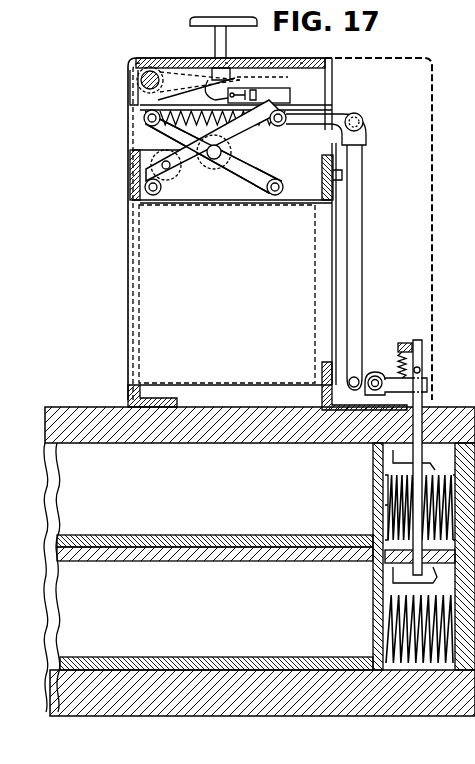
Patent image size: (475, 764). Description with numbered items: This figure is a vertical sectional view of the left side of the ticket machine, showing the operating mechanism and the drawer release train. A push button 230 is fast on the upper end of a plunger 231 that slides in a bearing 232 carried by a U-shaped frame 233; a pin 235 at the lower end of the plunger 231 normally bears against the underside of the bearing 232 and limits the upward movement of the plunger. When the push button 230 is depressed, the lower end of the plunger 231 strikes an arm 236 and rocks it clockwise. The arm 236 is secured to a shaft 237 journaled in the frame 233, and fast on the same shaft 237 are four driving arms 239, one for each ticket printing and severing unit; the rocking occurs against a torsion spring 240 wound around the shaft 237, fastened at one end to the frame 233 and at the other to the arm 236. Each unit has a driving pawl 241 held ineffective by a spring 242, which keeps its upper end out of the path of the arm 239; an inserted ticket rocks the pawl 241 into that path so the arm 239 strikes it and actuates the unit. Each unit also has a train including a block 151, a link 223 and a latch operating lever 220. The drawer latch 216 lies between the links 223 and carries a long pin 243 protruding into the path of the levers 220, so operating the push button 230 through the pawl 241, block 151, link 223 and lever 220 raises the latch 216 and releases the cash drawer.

The push button 230 is at (200, 19).
The plunger 231 is at (225, 58).
The bearing 232 is at (288, 49).
The U-shaped frame 233 is at (305, 62).
The pin 235 is at (276, 77).
The arm 236 is at (205, 82).
The shaft 237 is at (145, 80).
The driving arms 239 is at (178, 66).
The torsion spring 240 is at (132, 70).
The driving pawl 241 is at (278, 92).
The spring 242 is at (257, 96).
The block 151 is at (345, 132).
The link 223 is at (358, 206).
The latch operating lever 220 is at (394, 380).
The latch 216 is at (418, 340).
The pin 243 is at (421, 372).